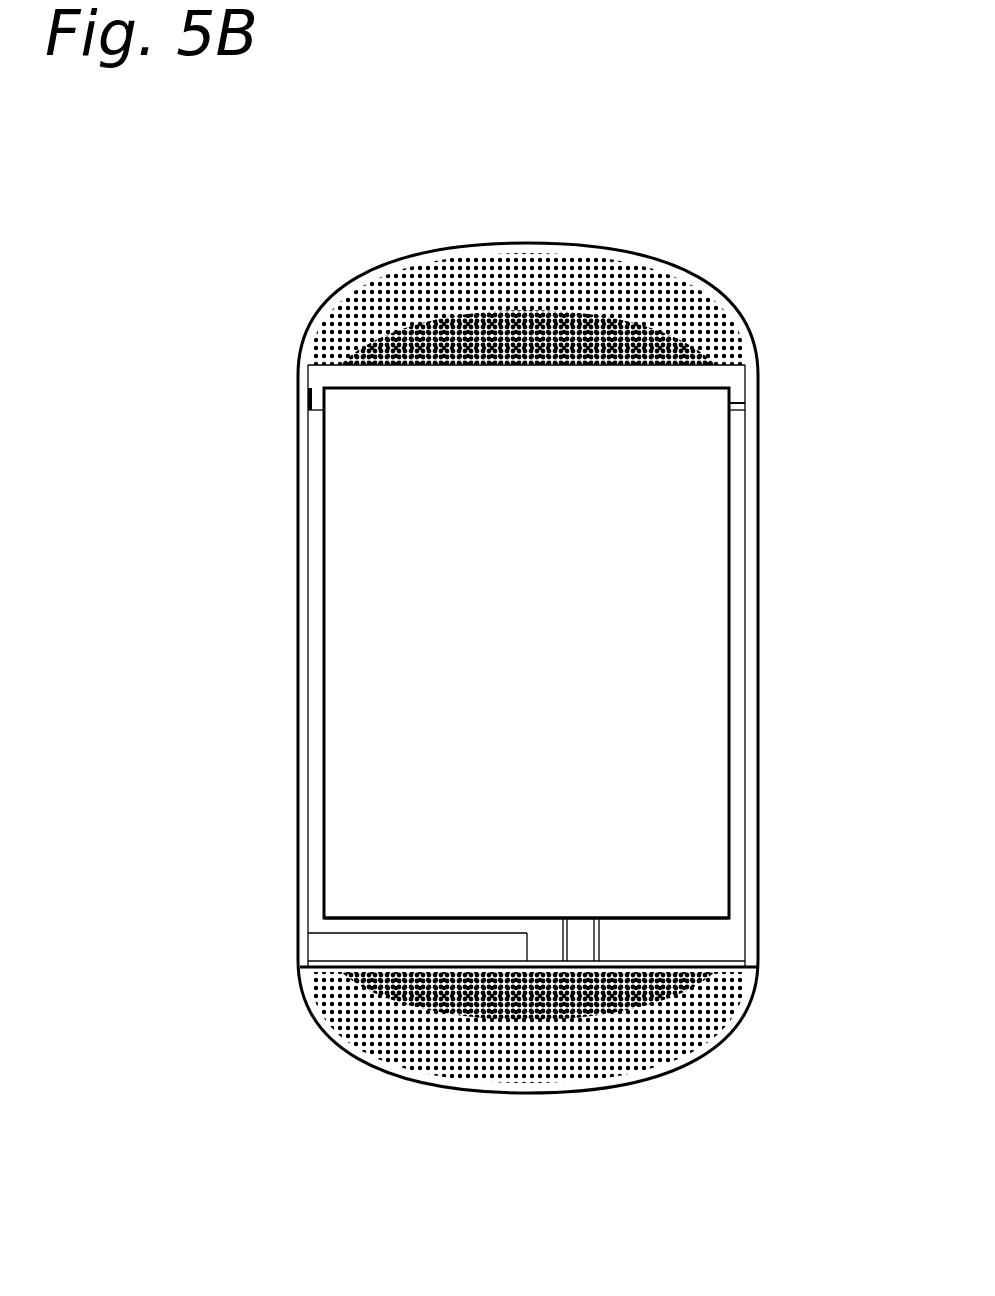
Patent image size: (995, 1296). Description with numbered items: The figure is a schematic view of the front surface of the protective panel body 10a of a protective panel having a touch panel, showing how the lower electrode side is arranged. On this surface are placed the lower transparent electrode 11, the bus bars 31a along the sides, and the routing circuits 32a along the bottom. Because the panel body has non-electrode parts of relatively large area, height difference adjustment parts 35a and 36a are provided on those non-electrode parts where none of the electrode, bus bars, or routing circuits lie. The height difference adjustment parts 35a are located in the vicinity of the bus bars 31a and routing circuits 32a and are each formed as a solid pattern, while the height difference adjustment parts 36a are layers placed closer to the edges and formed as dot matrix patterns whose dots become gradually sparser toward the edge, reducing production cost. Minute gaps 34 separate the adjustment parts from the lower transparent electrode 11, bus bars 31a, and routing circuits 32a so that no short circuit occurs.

The protective panel body 10a is at (727, 257).
The lower transparent electrode 11 is at (553, 725).
The bus bar 31a is at (313, 648).
The routing circuit 32a is at (443, 935).
The minute gap 34 is at (628, 948).
The height difference adjustment part 35a is at (518, 378).
The height difference adjustment part 36a is at (538, 275).